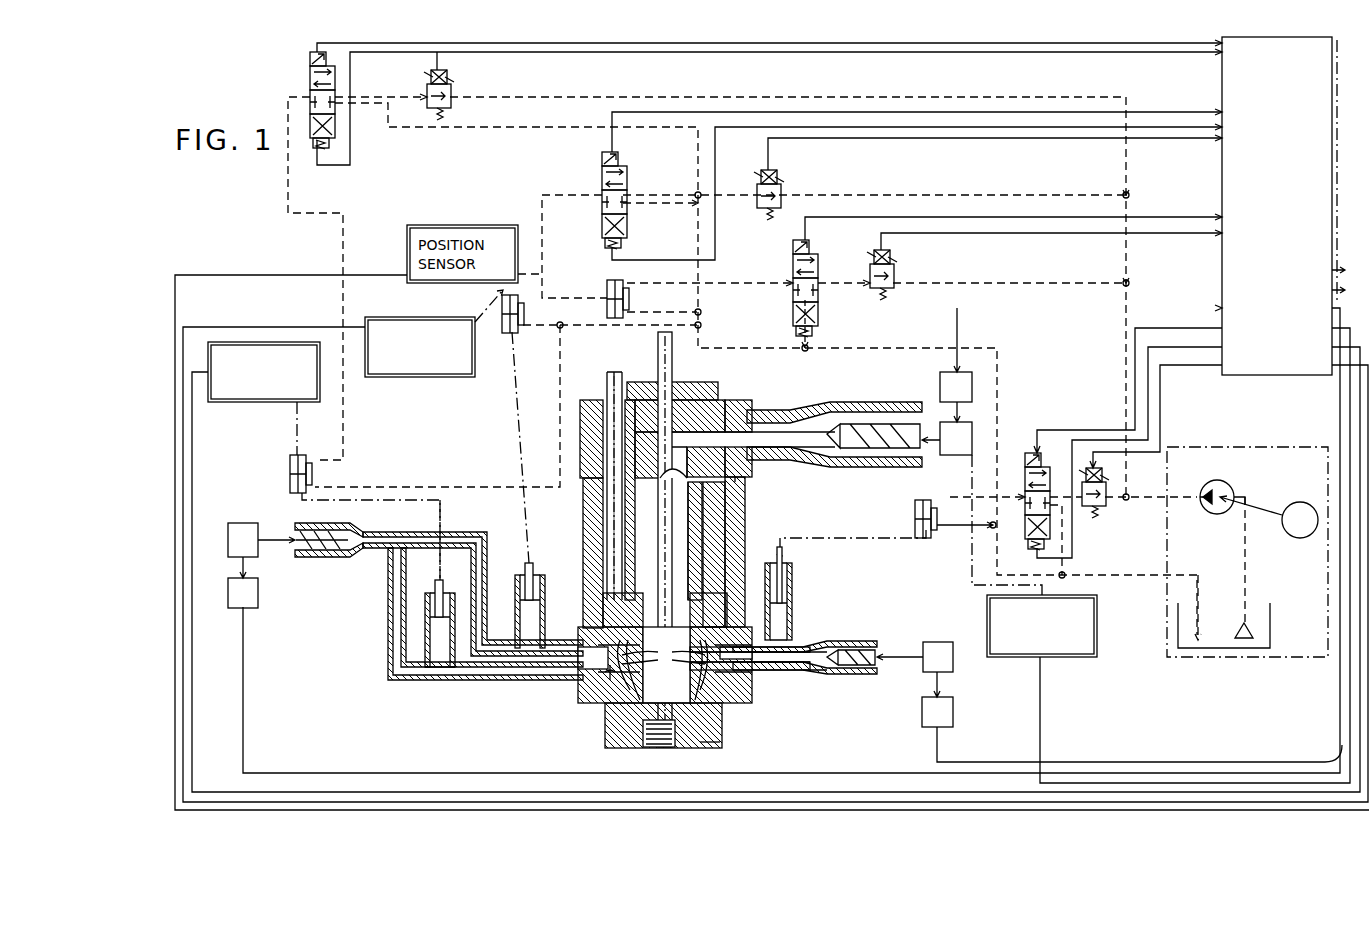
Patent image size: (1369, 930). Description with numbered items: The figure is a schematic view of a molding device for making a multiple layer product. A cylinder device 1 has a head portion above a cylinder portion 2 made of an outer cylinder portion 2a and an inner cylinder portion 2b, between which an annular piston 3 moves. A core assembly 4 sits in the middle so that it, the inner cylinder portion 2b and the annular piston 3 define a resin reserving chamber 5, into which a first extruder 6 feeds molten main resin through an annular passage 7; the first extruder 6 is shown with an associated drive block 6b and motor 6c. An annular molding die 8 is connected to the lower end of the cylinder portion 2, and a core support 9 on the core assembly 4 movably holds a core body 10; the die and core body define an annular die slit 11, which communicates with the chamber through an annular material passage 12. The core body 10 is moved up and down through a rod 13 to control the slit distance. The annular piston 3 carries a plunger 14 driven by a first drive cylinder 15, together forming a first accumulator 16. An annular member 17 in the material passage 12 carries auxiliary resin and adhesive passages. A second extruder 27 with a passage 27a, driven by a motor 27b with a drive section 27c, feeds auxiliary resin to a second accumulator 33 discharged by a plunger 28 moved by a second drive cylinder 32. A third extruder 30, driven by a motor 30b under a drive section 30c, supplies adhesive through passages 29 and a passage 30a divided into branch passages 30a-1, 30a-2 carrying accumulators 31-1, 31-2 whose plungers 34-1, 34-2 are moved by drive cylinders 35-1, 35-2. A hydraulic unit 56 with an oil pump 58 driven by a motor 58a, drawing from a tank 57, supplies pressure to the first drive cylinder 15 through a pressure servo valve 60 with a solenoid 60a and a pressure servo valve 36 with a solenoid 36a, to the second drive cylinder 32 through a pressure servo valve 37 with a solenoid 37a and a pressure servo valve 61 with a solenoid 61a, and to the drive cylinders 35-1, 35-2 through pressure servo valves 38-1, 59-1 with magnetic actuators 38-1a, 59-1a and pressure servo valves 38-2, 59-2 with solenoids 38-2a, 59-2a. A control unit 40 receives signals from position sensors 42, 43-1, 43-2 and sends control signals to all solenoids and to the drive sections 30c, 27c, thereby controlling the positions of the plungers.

The cylinder device 1 is at (722, 388).
The cylinder portion 2 is at (745, 502).
The outer cylinder portion 2a is at (740, 484).
The inner cylinder portion 2b is at (700, 535).
The annular piston 3 is at (712, 600).
The core assembly 4 is at (742, 480).
The resin reserving chamber 5 is at (590, 615).
The first extruder 6 is at (842, 405).
The nozzle drive controller 6b is at (938, 386).
The nozzle drive motor 6c is at (940, 455).
The annular passage 7 is at (702, 512).
The annular molding die 8 is at (722, 728).
The core support 9 is at (745, 680).
The core body 10 is at (705, 748).
The annular die slit 11 is at (620, 745).
The annular material passage 12 is at (600, 700).
The rod 13 is at (658, 360).
The plunger 14 is at (609, 372).
The first drive cylinder 15 is at (605, 296).
The first accumulator 16 is at (592, 510).
The annular member 17 is at (585, 690).
The second extruder 27 is at (858, 640).
The passage 27a is at (795, 670).
The motor 27b is at (938, 641).
The drive section 27c is at (953, 712).
The plunger 28 is at (782, 558).
The passages 29 is at (588, 636).
The third extruder 30 is at (305, 526).
The passage 30a is at (378, 532).
The branch passage 30a-1 is at (490, 658).
The branch passage 30a-2 is at (415, 681).
The motor 30b is at (227, 526).
The drive section 30c is at (258, 595).
The accumulator 31-1 is at (515, 585).
The accumulator 31-2 is at (417, 629).
The second drive cylinder 32 is at (906, 512).
The second accumulator 33 is at (792, 580).
The plunger 34-1 is at (530, 562).
The plunger 34-2 is at (434, 584).
The drive cylinder 35-1 is at (505, 337).
The drive cylinder 35-2 is at (283, 475).
The pressure servo valve 36 is at (825, 250).
The solenoid 36a is at (792, 248).
The pressure servo valve 37 is at (1028, 458).
The solenoid 37a is at (1018, 454).
The pressure servo valve 38-1 is at (594, 185).
The magnetic actuator 38-1a is at (600, 157).
The pressure servo valve 38-2 is at (302, 88).
The solenoid 38-2a is at (308, 57).
The control unit 40 is at (1240, 378).
The position sensor 42 is at (1100, 612).
The position sensor 43-1 is at (388, 316).
The position sensor 43-2 is at (247, 403).
The hydraulic unit 56 is at (1166, 630).
The oil tank 57 is at (1271, 614).
The oil pump 58 is at (1230, 485).
The motor 58a is at (1300, 502).
The pressure servo valve 59-1 is at (790, 189).
The magnetic actuator 59-1a is at (778, 168).
The pressure servo valve 59-2 is at (452, 92).
The solenoid 59-2a is at (447, 72).
The pressure servo valve 60 is at (895, 280).
The solenoid 60a is at (892, 258).
The pressure servo valve 61 is at (1108, 478).
The solenoid 61a is at (1092, 464).